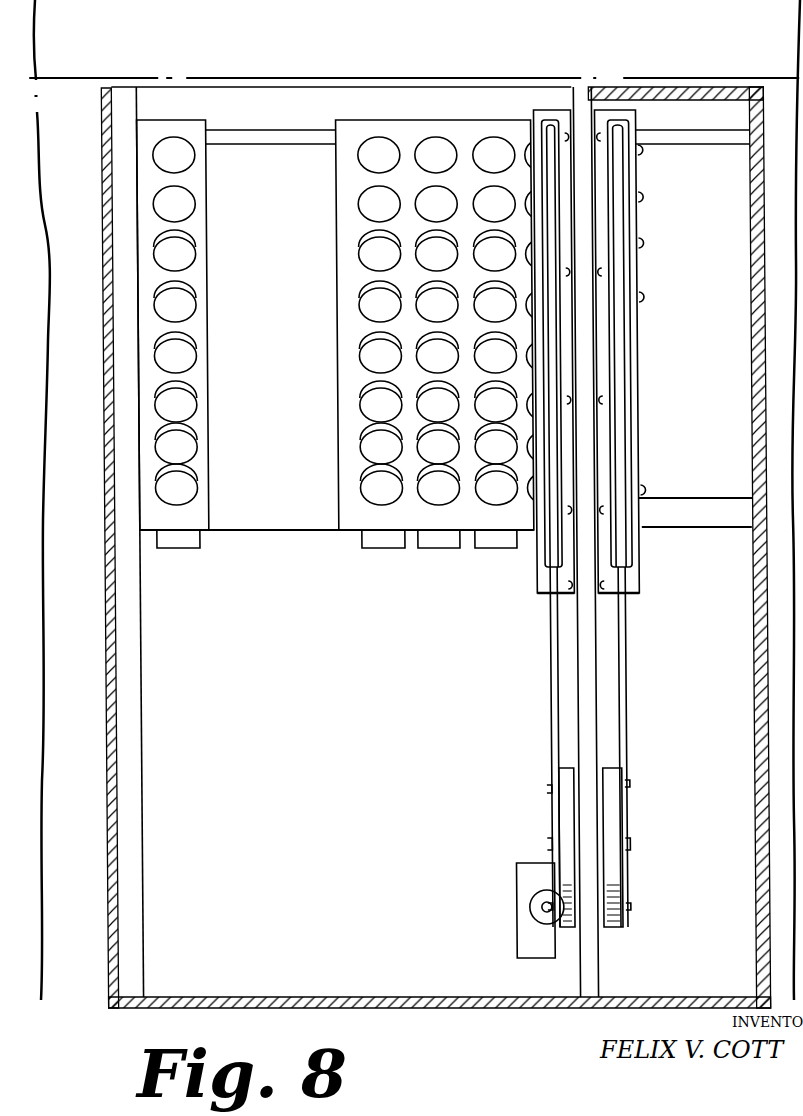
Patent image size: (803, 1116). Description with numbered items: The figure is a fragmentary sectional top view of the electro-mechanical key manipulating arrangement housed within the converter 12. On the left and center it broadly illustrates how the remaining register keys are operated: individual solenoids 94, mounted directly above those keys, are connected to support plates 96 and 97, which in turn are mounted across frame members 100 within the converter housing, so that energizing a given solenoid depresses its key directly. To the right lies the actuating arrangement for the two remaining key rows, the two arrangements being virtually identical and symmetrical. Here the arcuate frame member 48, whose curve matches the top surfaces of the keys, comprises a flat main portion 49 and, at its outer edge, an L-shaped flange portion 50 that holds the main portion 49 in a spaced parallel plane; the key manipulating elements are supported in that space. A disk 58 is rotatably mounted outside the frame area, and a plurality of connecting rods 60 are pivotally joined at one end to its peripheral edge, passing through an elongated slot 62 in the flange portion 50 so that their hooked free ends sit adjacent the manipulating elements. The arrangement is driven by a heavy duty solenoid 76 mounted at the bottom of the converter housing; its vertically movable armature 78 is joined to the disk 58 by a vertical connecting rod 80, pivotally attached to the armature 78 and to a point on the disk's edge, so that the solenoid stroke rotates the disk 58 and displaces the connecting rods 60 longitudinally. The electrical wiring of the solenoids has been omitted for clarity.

The converter 12 is at (117, 790).
The arcuate frame member 48 is at (538, 518).
The flat main portion 49 is at (534, 585).
The L-shaped flange portion 50 is at (540, 597).
The disk 58 is at (557, 826).
The connecting rods 60 is at (552, 703).
The elongated slot 62 is at (549, 510).
The heavy duty solenoid 76 is at (514, 913).
The armature 78 is at (533, 893).
The vertical connecting rod 80 is at (547, 914).
The individual solenoids 94 is at (186, 140).
The support plate 96 is at (211, 221).
The support plate 97 is at (339, 280).
The frame members 100 is at (271, 129).